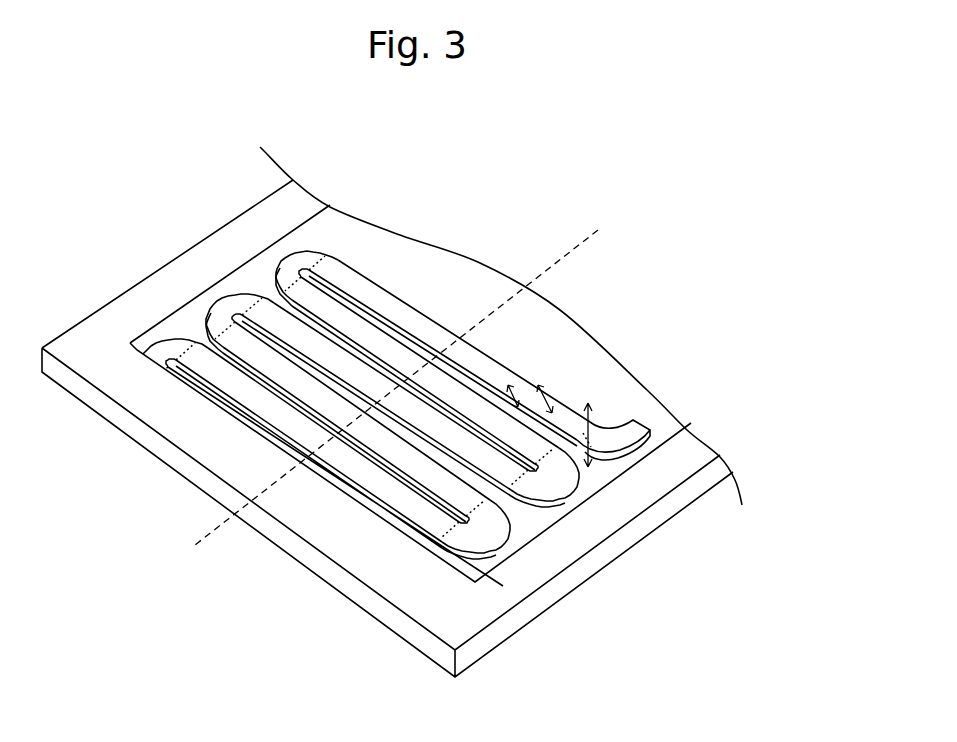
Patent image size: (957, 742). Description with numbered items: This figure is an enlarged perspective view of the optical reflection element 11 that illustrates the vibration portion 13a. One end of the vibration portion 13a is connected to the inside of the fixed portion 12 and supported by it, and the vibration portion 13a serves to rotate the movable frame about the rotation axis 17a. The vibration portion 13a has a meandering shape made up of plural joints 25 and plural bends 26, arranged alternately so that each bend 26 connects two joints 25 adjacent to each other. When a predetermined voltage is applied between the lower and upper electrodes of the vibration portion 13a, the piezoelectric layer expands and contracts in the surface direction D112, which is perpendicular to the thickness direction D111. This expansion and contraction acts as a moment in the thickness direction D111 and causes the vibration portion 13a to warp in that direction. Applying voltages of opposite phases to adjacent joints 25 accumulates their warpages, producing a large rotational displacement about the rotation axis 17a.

The optical reflection element 11 is at (713, 272).
The fixed portion 12 is at (413, 577).
The vibration portion 13a is at (262, 293).
The rotation axis 17a is at (411, 374).
The joint 25 is at (483, 318).
The bend 26 is at (307, 258).
The surface direction D112 is at (540, 390).
The thickness direction D111 is at (590, 417).